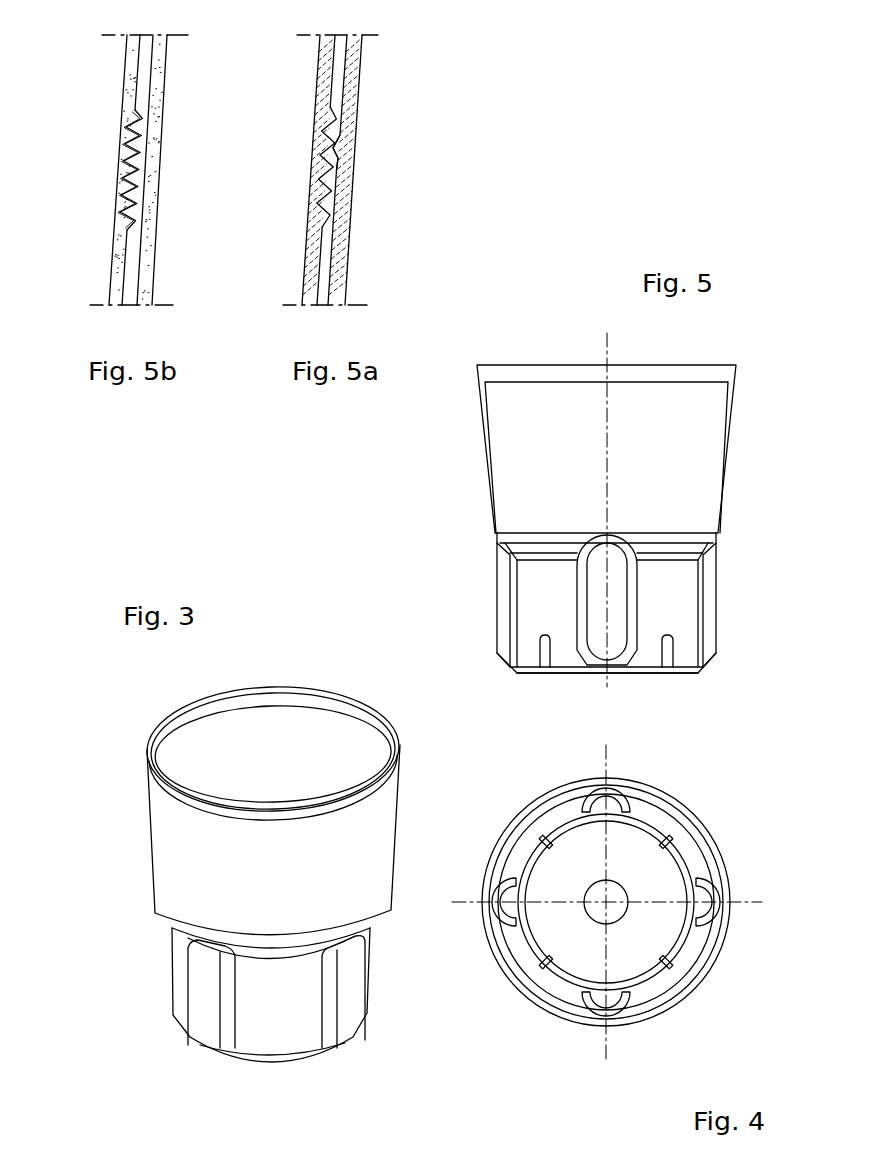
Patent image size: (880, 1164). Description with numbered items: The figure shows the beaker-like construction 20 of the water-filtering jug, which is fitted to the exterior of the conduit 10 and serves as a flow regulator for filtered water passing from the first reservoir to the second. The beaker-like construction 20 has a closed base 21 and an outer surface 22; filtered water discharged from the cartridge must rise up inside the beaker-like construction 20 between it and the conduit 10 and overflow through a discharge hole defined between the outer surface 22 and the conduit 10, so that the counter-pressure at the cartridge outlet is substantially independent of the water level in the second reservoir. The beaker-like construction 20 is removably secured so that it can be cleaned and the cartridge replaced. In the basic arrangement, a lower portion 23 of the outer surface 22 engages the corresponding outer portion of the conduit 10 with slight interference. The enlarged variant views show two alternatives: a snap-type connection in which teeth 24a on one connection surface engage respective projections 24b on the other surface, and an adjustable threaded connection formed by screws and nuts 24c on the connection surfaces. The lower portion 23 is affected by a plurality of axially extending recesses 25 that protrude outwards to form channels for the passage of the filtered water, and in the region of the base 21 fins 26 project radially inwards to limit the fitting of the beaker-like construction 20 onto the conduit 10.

In FIG. 5B, the conduit 10 is at (172, 87).
In FIG. 5A, the conduit 10 is at (367, 112).
In FIG. 5B, the beaker-like construction 20 is at (106, 163).
In FIG. 5A, the beaker-like construction 20 is at (303, 155).
In FIG. 5, the beaker-like construction 20 is at (630, 540).
In FIG. 3, the beaker-like construction 20 is at (249, 888).
In FIG. 5, the closed base 21 is at (553, 675).
In FIG. 5, the outer surface 22 is at (487, 458).
In FIG. 3, the outer surface 22 is at (174, 864).
In FIG. 5A, the lower portion of the outer surface 23 is at (322, 91).
In FIG. 5, the lower portion of the outer surface 23 is at (495, 615).
In FIG. 5A, the teeth 24a is at (339, 170).
In FIG. 5A, the projections 24b is at (327, 211).
In FIG. 5B, the screws and nuts 24c is at (131, 242).
In FIG. 5, the axially extending recesses 25 is at (615, 552).
In FIG. 3, the axially extending recesses 25 is at (205, 1022).
In FIG. 4, the axially extending recesses 25 is at (632, 800).
In FIG. 5, the fins 26 is at (672, 653).